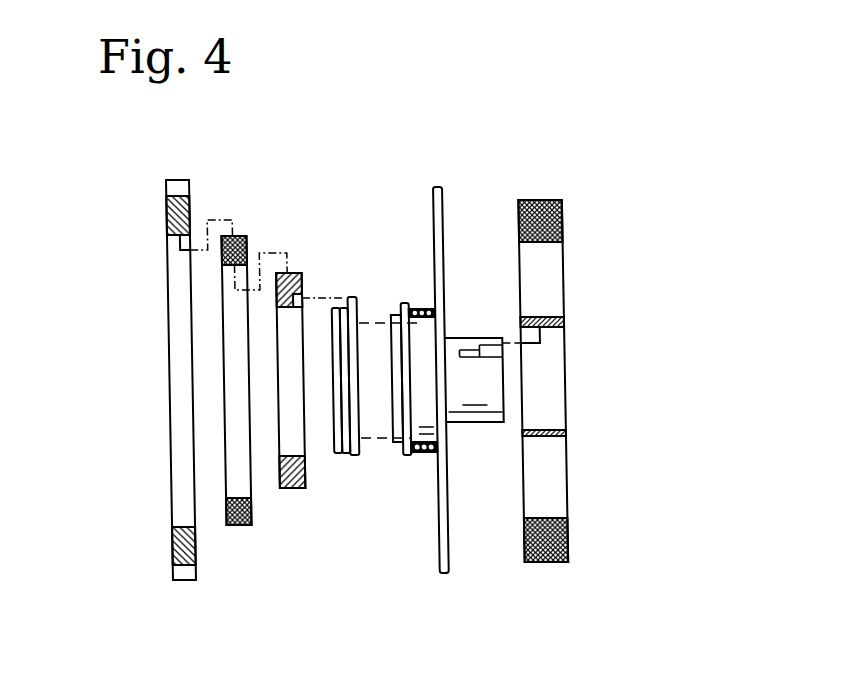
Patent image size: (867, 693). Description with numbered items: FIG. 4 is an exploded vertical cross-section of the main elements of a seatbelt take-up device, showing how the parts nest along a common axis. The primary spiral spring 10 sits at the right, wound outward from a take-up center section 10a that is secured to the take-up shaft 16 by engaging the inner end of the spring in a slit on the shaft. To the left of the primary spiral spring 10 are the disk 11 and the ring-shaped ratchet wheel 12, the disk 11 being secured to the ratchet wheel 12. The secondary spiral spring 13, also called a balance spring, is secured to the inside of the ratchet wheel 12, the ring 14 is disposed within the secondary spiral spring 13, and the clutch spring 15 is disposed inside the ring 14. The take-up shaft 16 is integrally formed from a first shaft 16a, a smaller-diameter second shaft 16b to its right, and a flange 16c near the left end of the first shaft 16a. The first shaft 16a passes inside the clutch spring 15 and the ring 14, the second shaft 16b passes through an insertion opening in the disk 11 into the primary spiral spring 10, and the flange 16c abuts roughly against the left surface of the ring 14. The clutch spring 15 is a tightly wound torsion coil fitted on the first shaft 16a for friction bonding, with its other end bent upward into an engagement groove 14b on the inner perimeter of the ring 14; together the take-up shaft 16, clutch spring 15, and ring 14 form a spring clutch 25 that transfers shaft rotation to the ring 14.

The primary spiral spring 10 is at (545, 200).
The take-up center section 10a is at (546, 317).
The disk 11 is at (452, 560).
The ratchet wheel 12 is at (176, 582).
The secondary spiral spring 13 is at (230, 525).
The ring 14 is at (288, 488).
The engagement groove 14b is at (300, 293).
The clutch spring 15 is at (346, 305).
The take-up shaft 16 is at (400, 283).
The first shaft 16a is at (420, 403).
The second shaft 16b is at (478, 422).
The flange 16c is at (406, 452).
The spring clutch 25 is at (342, 537).